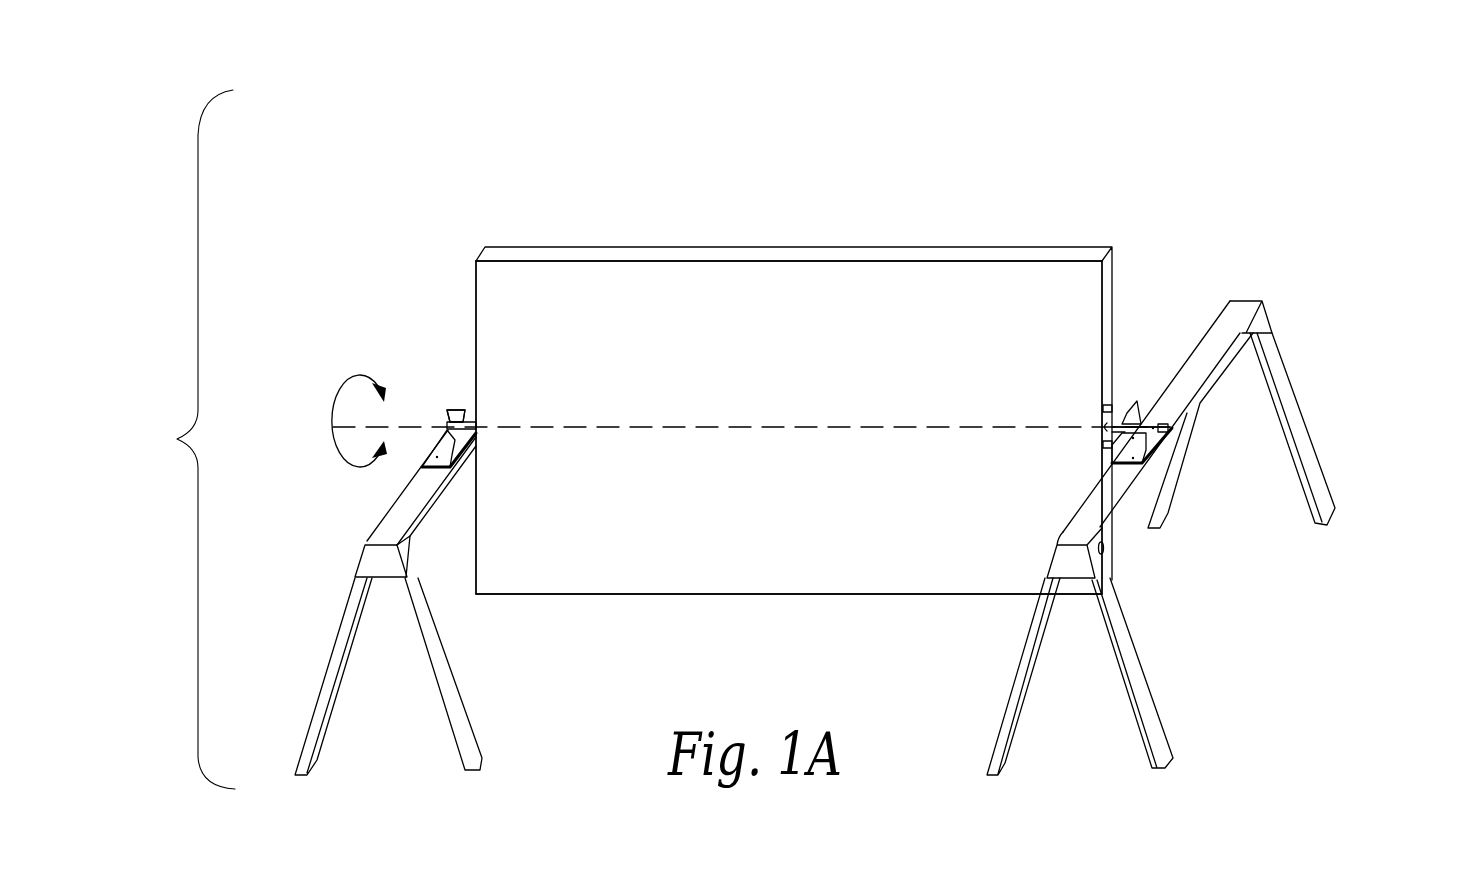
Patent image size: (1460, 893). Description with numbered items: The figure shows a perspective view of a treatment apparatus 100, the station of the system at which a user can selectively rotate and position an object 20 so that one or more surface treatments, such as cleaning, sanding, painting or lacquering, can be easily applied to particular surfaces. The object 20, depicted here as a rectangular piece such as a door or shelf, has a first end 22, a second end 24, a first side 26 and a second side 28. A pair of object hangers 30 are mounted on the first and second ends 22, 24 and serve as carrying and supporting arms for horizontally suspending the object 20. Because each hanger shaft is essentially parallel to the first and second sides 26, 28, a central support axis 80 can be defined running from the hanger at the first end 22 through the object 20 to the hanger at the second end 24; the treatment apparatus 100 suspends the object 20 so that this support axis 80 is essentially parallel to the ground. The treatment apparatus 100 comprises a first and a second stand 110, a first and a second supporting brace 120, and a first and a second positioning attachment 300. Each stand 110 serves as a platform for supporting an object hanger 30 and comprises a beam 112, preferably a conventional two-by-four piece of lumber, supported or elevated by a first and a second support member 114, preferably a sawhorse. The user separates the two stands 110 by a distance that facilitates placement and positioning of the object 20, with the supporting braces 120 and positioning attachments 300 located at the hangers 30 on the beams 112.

The treatment apparatus 100 is at (178, 439).
The object 20 is at (746, 399).
The first end 22 is at (475, 300).
The second end 24 is at (1106, 275).
The first side 26 is at (785, 255).
The second side 28 is at (753, 595).
The support axis 80 is at (772, 427).
The object hanger 30 is at (446, 421).
The positioning attachment 300 is at (448, 425).
The stand 110 is at (836, 528).
The beam 112 is at (412, 500).
The support member 114 is at (462, 705).
The supporting brace 120 is at (427, 455).